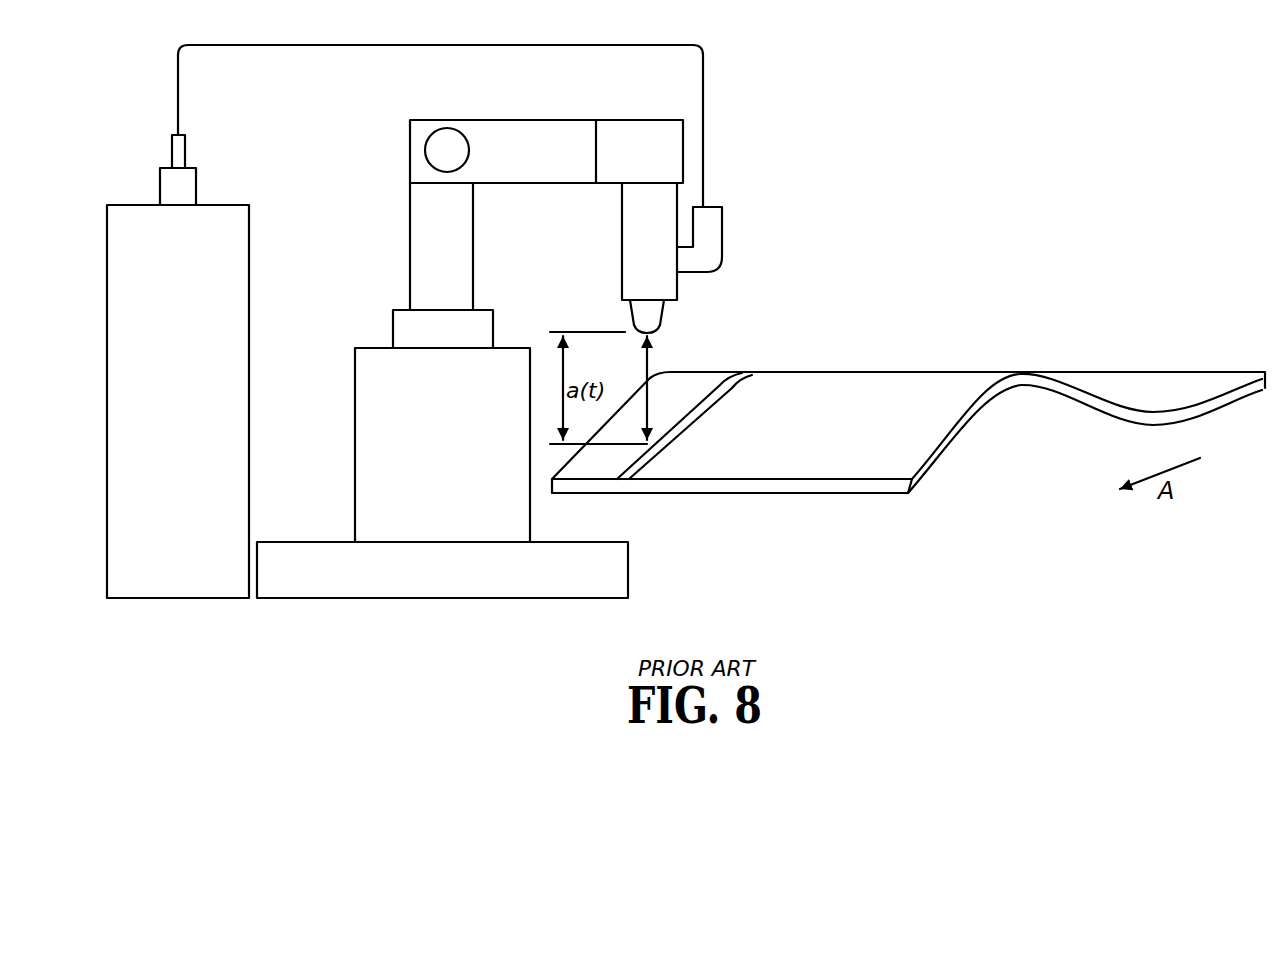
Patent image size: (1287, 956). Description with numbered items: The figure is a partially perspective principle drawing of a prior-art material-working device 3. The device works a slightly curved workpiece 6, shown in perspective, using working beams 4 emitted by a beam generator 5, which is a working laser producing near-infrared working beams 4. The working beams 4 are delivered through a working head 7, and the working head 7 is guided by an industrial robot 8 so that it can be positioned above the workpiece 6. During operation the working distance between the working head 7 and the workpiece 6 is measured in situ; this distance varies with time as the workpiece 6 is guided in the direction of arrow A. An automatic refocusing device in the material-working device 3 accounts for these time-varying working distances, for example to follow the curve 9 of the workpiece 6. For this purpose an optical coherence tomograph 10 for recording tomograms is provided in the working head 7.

The material-working device 3 is at (945, 97).
The working beams 4 is at (652, 390).
The beam generator 5 is at (130, 200).
The workpiece 6 is at (885, 390).
The working head 7 is at (650, 318).
The industrial robot 8 is at (384, 325).
The curve 9 is at (1043, 388).
The optical coherence tomograph 10 is at (637, 260).